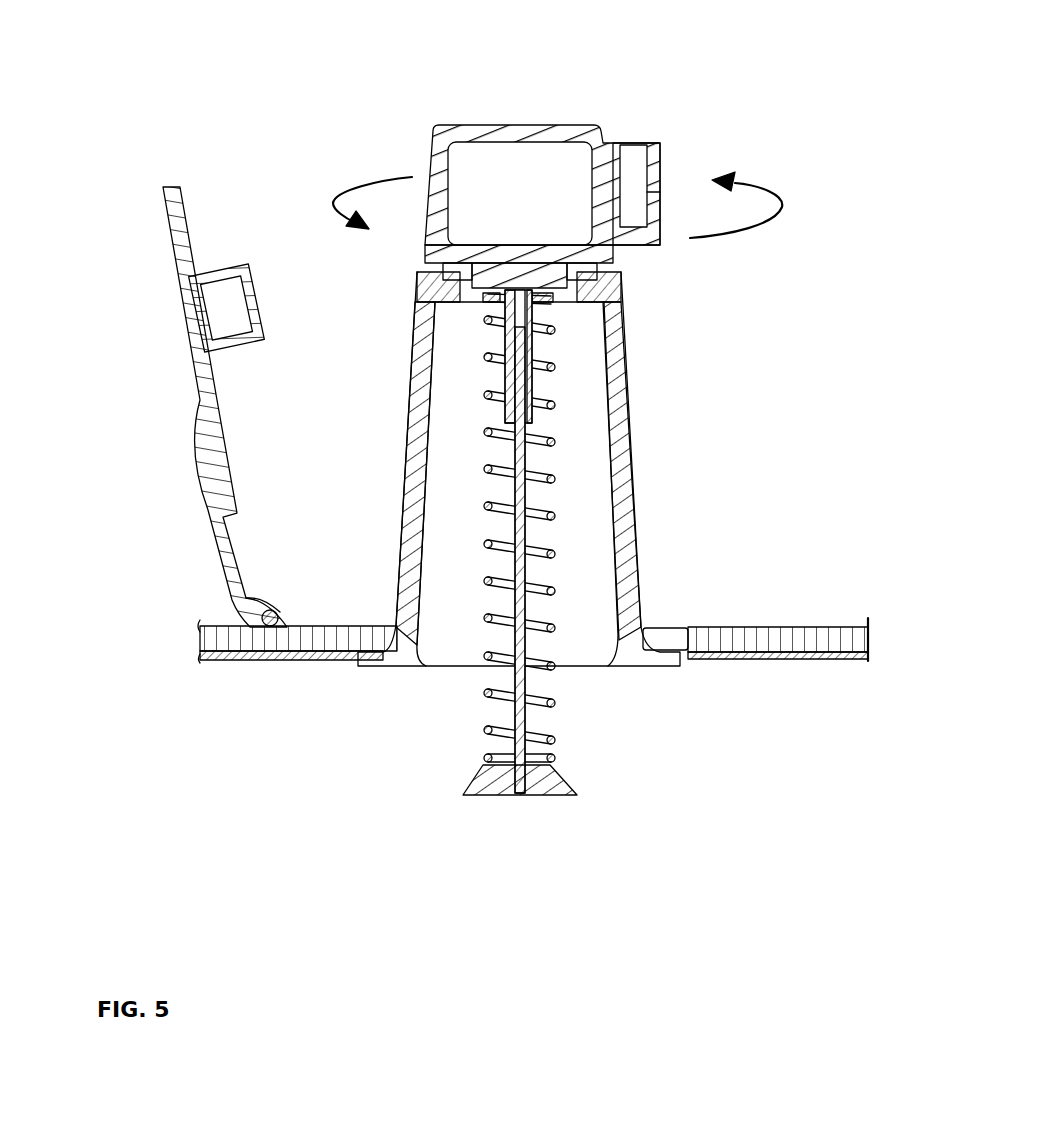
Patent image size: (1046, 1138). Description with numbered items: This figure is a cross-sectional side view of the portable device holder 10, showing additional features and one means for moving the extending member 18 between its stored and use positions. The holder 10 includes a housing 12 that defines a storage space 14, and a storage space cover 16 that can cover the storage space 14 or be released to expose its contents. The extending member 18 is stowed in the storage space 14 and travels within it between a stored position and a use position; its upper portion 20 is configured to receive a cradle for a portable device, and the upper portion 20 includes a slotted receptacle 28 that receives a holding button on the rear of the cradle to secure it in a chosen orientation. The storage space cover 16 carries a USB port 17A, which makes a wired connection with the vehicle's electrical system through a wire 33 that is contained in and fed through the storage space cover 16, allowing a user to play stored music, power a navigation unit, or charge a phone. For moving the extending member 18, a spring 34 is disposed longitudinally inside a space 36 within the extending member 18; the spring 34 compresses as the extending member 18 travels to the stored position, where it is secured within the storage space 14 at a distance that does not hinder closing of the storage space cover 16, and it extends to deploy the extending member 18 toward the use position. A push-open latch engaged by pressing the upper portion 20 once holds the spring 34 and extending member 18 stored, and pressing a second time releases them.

The portable device holder 10 is at (739, 47).
The housing 12 is at (782, 618).
The storage space 14 is at (655, 633).
The storage space cover 16 is at (165, 248).
The USB port 17A is at (222, 263).
The extending member 18 is at (634, 415).
The upper portion 20 is at (526, 114).
The slotted receptacle 28 is at (633, 246).
The wire 33 is at (273, 627).
The spring 34 is at (522, 500).
The space 36 is at (569, 549).